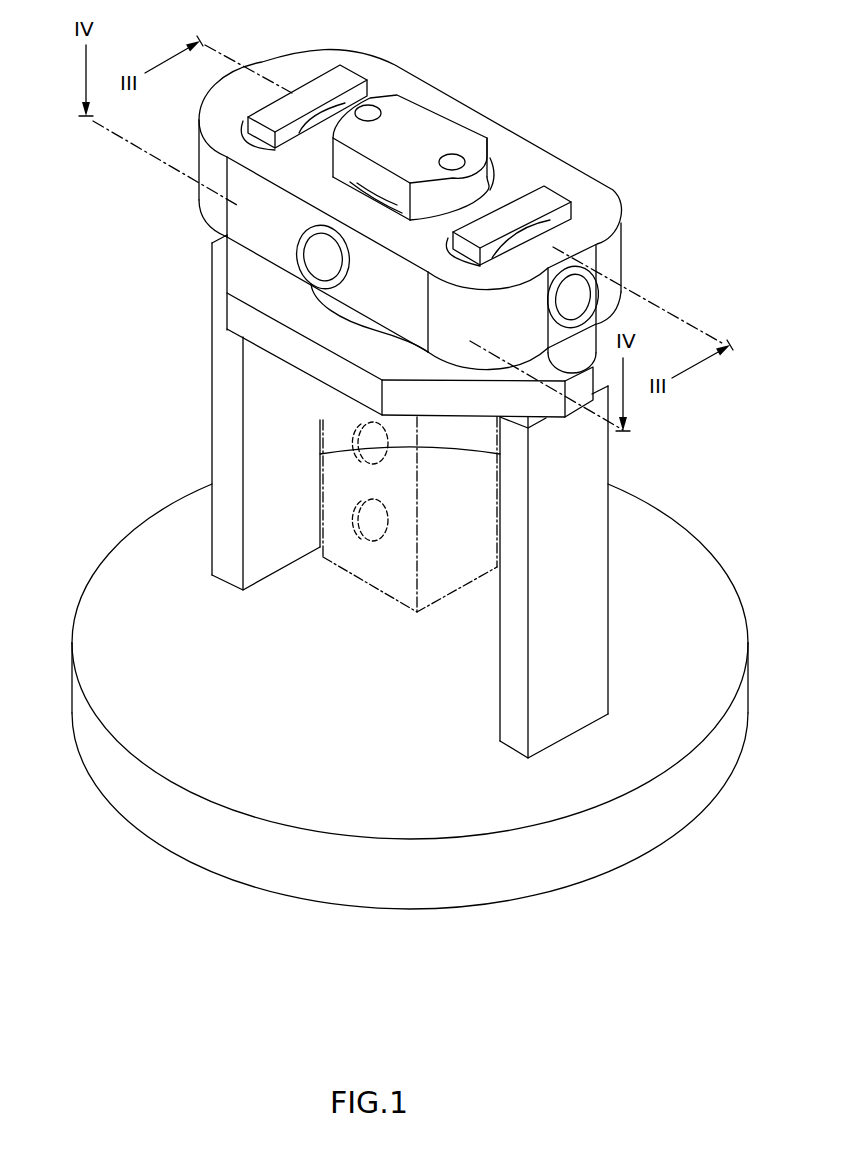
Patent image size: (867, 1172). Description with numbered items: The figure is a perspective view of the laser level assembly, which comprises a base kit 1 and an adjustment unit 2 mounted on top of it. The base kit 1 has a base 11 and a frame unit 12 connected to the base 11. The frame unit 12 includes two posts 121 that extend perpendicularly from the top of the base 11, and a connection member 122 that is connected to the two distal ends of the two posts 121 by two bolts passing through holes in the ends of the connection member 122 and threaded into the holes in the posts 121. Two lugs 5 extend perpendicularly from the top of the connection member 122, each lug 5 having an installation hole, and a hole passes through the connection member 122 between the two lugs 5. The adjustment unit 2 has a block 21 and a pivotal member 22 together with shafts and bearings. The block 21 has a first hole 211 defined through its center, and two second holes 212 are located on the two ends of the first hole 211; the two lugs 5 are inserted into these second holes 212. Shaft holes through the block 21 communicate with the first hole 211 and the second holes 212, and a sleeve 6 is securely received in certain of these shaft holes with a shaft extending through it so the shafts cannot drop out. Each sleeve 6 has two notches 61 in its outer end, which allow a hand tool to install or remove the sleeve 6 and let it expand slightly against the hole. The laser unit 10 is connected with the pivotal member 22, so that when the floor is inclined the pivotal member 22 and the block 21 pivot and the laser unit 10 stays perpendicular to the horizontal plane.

The base kit 1 is at (45, 400).
The adjustment unit 2 is at (604, 146).
The lugs 5 is at (343, 82).
The sleeve 6 is at (598, 290).
The laser unit 10 is at (395, 600).
The base 11 is at (158, 557).
The frame unit 12 is at (103, 343).
The block 21 is at (441, 97).
The pivotal member 22 is at (456, 130).
The notches 61 is at (572, 256).
The posts 121 is at (222, 402).
The connection member 122 is at (240, 318).
The first hole 211 is at (493, 163).
The second holes 212 is at (332, 74).